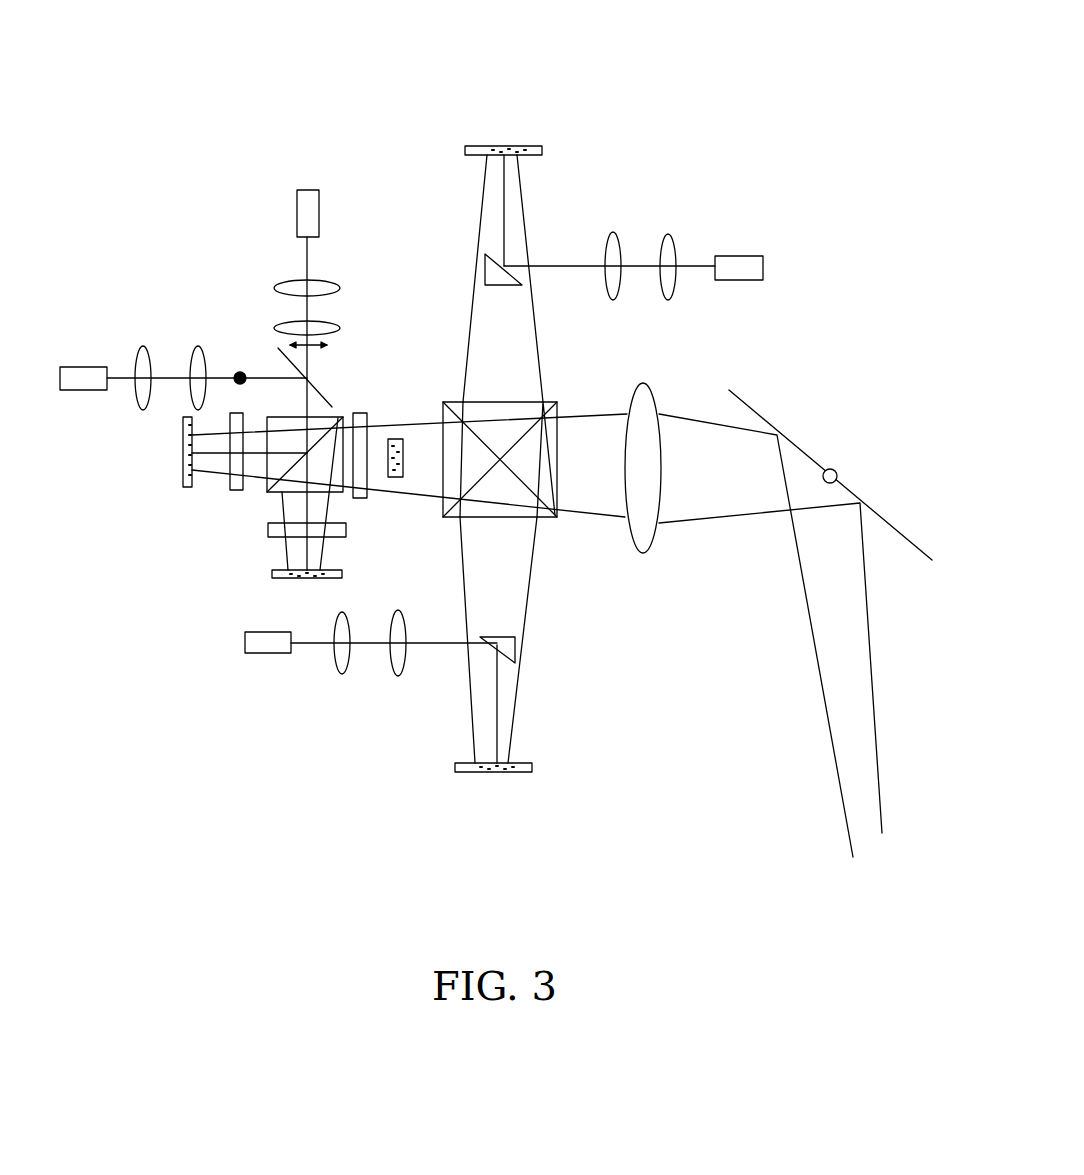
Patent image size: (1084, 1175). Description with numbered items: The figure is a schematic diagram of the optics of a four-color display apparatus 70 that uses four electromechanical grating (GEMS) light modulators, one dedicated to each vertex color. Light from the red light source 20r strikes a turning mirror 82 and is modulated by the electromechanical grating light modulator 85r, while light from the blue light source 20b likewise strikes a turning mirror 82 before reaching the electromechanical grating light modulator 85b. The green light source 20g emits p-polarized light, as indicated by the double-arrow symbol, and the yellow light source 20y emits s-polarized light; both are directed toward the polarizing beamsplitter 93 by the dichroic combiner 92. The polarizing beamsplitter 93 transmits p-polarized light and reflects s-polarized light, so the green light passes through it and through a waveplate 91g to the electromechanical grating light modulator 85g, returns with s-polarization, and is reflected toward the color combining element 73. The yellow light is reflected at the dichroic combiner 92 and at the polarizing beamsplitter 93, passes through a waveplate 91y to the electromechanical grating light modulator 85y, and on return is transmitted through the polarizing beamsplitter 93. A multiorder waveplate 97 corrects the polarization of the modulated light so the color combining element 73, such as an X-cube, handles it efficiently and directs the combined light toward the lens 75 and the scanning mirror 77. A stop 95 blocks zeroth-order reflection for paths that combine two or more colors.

The display apparatus 70 is at (548, 92).
The electromechanical grating light modulator 85r is at (470, 147).
The turning mirror 82 is at (485, 265).
The red light source 20r is at (757, 256).
The color combining element 73 is at (553, 402).
The scanning mirror 77 is at (757, 410).
The lens 75 is at (643, 553).
The electromechanical grating light modulator 85b is at (455, 768).
The blue light source 20b is at (245, 640).
The yellow light source 20y is at (97, 392).
The electromechanical grating light modulator 85y is at (183, 487).
The waveplate 91y is at (232, 492).
The polarizing beamsplitter 93 is at (338, 495).
The multiorder waveplate 97 is at (365, 415).
The stop 95 is at (397, 477).
The green light source 20g is at (297, 210).
The dichroic combiner 92 is at (315, 383).
The waveplate 91g is at (268, 532).
The electromechanical grating light modulator 85g is at (278, 578).